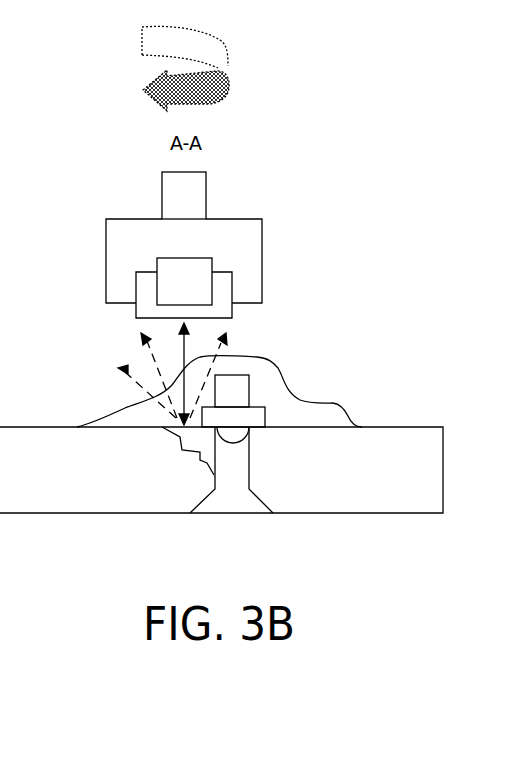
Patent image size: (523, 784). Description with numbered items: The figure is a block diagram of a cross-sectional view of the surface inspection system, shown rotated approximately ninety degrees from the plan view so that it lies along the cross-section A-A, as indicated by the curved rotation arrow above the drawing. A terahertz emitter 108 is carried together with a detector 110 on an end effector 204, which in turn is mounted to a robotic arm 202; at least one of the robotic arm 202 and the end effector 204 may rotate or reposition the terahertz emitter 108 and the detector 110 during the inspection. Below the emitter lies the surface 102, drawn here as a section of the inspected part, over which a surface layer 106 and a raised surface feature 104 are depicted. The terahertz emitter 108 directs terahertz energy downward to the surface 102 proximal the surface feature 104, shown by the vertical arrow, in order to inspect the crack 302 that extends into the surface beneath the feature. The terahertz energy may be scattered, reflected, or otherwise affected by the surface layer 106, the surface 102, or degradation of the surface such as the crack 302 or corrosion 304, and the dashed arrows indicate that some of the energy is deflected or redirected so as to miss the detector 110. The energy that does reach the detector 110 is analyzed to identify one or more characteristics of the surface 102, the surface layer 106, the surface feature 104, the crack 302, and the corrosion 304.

The surface 102 is at (34, 427).
The surface feature 104 is at (253, 390).
The surface layer 106 is at (378, 388).
The terahertz emitter 108 is at (202, 293).
The detector 110 is at (232, 295).
The robotic arm 202 is at (206, 196).
The end effector 204 is at (262, 258).
The crack 302 is at (178, 445).
The corrosion 304 is at (255, 430).